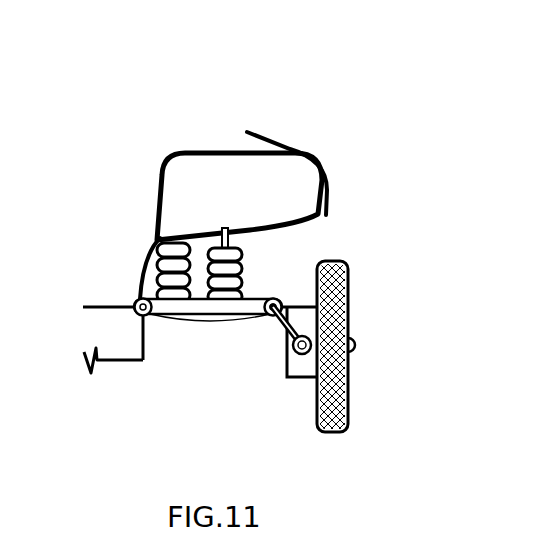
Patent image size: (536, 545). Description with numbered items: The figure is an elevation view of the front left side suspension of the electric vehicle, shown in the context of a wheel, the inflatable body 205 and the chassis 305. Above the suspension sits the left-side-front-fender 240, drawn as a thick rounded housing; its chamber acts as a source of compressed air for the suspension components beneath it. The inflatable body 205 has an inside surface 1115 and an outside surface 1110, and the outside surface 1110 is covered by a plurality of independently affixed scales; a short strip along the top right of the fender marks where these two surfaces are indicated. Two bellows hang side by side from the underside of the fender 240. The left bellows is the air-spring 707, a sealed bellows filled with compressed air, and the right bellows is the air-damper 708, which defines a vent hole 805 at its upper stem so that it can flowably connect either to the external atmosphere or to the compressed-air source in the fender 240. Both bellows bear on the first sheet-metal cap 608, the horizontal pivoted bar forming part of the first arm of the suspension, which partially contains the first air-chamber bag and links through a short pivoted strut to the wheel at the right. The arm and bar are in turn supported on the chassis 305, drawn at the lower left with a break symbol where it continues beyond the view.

The inside surface 1115 is at (254, 146).
The outside surface 1110 is at (268, 141).
The left-side-front-fender 240 is at (277, 187).
The vent hole 805 is at (218, 224).
The air-damper 708 is at (242, 272).
The air-spring 707 is at (186, 282).
The first sheet-metal cap 608 is at (233, 310).
The inflatable body 205 is at (133, 267).
The chassis 305 is at (117, 347).